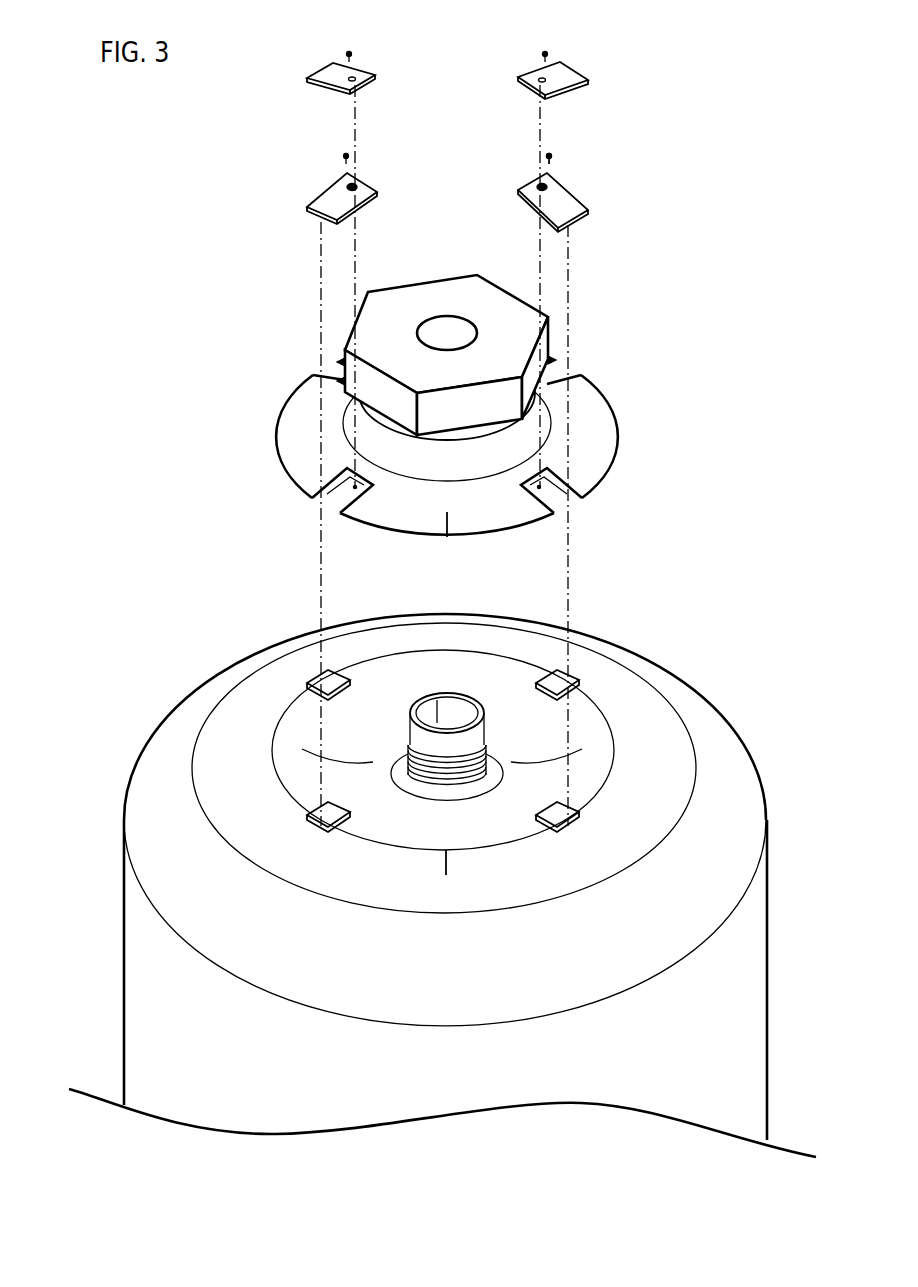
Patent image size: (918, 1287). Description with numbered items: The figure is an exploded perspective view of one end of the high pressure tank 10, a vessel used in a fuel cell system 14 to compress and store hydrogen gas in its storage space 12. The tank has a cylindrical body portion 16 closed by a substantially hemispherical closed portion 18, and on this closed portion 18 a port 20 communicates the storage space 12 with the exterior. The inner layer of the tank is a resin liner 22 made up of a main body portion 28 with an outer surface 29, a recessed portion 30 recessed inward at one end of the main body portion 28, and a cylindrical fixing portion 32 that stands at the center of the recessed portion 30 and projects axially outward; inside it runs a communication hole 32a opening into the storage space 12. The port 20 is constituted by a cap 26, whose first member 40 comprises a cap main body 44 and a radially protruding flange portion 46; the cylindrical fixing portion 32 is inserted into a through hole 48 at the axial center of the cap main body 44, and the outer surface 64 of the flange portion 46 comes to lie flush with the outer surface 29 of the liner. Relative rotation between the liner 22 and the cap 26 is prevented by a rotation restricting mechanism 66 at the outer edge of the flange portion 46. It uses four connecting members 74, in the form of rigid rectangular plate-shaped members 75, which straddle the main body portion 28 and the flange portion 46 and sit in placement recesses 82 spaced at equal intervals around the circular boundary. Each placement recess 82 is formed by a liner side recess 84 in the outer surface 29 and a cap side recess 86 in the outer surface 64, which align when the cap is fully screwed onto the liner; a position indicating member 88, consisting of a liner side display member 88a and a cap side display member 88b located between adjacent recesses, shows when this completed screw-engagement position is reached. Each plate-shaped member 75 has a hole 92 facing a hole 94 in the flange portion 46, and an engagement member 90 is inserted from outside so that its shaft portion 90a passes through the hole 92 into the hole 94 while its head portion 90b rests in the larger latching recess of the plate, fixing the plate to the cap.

The high pressure tank 10 is at (431, 581).
The fuel cell system 14 is at (205, 138).
The storage space 12 is at (148, 999).
The body portion 16 is at (124, 919).
The closed portion 18 is at (170, 742).
The liner 22 is at (176, 686).
The main body portion 28 is at (473, 767).
The outer surface 29 is at (622, 690).
The recessed portion 30 is at (397, 650).
The cylindrical fixing portion 32 is at (409, 709).
The communication hole 32a is at (457, 717).
The liner side recess 84 is at (318, 678).
The placement recess 82 is at (398, 709).
The liner side display member 88a is at (448, 857).
The cap side display member 88b is at (449, 523).
The position indicating member 88 is at (481, 916).
The first member 40 is at (466, 416).
The cap main body 44 is at (399, 294).
The flange portion 46 is at (600, 406).
The through hole 48 is at (460, 326).
The outer surface 64 is at (290, 416).
The cap side recess 86 is at (658, 467).
The hole 94 is at (336, 490).
The port 20 is at (422, 226).
The cap 26 is at (463, 247).
The rotation restricting mechanism 66 is at (621, 131).
The connecting member 74 is at (451, 133).
The plate-shaped member 75 is at (563, 72).
The engagement member 90 is at (350, 50).
The shaft portion 90a is at (552, 160).
The head portion 90b is at (554, 155).
The hole 92 is at (362, 90).